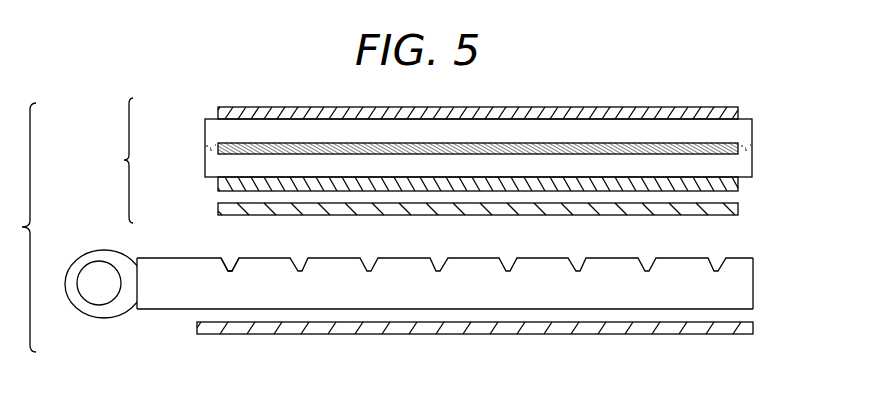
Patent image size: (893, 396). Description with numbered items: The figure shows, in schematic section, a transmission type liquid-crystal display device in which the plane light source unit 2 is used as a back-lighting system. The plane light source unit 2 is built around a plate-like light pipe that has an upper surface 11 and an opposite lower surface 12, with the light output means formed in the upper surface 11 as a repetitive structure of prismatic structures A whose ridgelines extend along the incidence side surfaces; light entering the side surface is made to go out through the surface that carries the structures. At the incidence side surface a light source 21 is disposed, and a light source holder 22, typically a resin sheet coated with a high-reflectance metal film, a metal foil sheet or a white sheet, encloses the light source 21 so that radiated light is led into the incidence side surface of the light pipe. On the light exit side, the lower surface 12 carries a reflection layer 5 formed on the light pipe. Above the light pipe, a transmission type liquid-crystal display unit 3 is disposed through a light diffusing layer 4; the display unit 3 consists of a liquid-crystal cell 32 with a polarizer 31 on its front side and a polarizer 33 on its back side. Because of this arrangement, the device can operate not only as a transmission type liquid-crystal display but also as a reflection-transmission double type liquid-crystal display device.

The plane light source unit 2 is at (405, 297).
The transmission type liquid-crystal display unit 3 is at (429, 160).
The light diffusing layer 4 is at (738, 208).
The reflection layer 5 is at (753, 328).
The upper surface 11 is at (173, 258).
The lower surface 12 is at (183, 311).
The light source 21 is at (103, 293).
The light source holder 22 is at (88, 318).
The polarizer 31 is at (218, 111).
The liquid-crystal cell 32 is at (210, 166).
The polarizer 33 is at (218, 186).
The prismatic structures A is at (228, 263).